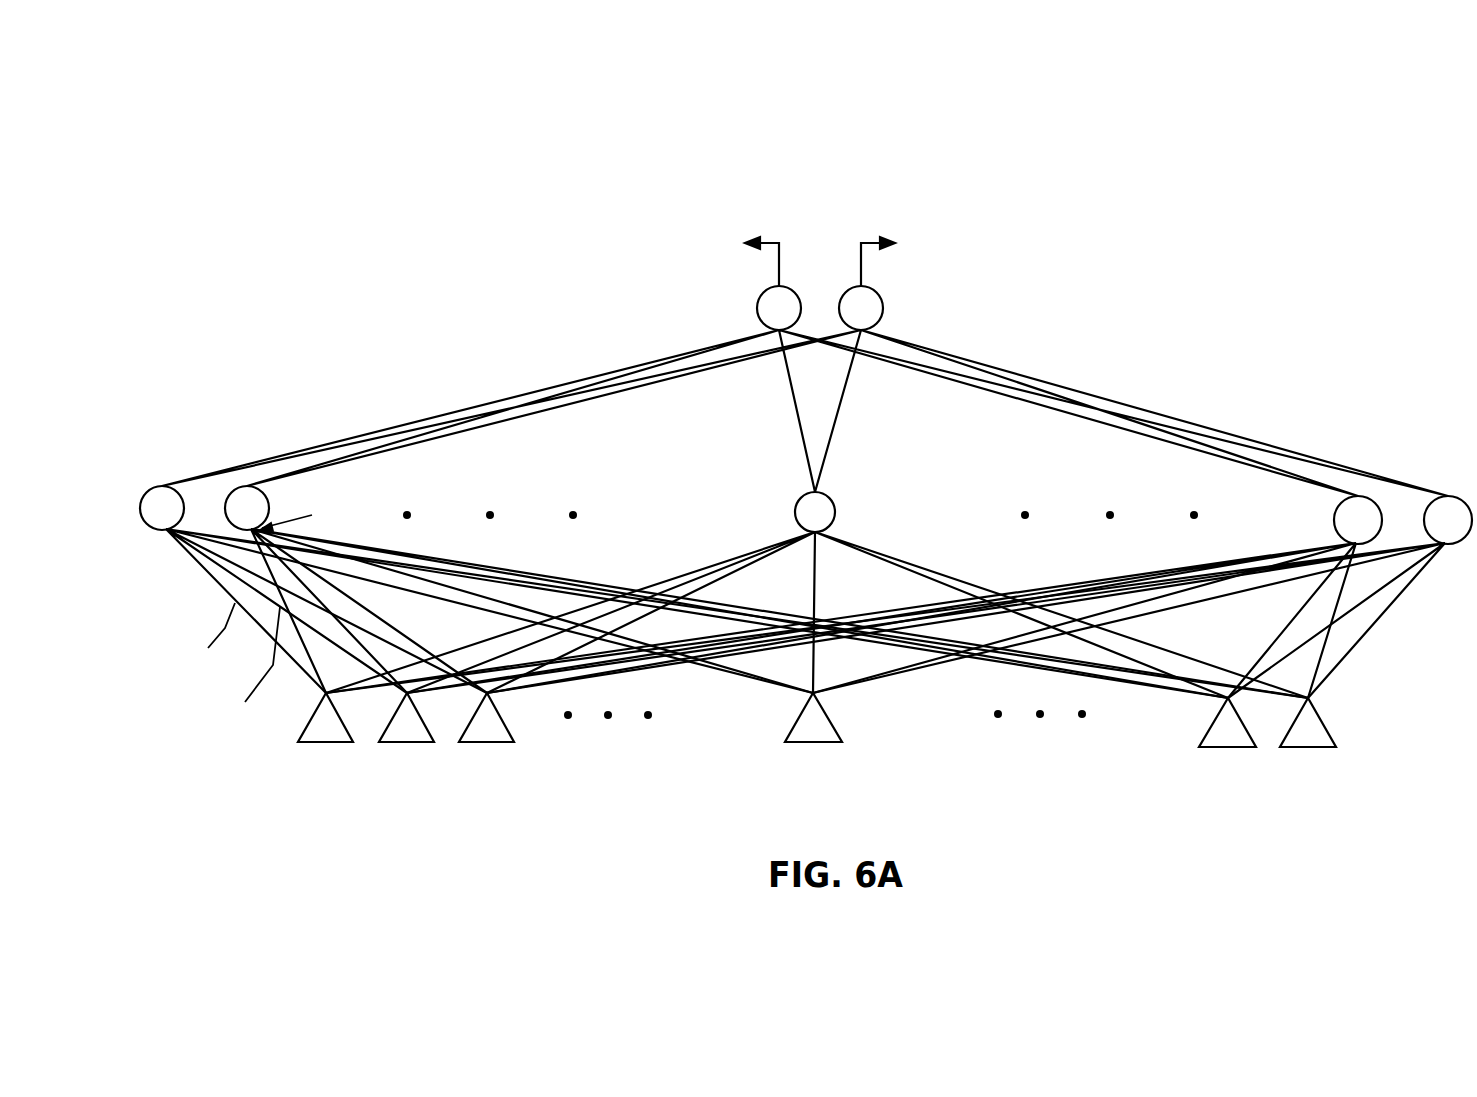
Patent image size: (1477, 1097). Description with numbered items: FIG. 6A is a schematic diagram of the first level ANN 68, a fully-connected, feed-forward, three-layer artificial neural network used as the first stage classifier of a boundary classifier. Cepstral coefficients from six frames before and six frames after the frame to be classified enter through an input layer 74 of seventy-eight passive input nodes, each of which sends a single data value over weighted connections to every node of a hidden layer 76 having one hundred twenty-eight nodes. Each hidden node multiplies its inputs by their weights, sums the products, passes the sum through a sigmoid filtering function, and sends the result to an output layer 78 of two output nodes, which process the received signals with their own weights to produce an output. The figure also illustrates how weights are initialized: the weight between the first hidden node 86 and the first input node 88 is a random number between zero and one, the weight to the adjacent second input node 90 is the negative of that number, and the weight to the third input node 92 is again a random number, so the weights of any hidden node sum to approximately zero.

The first level ANN 68 is at (1218, 207).
The output layer 78 is at (983, 315).
The hidden layer 76 is at (806, 484).
The input layer 74 is at (881, 742).
The first hidden node 86 is at (154, 524).
The first input node 88 is at (330, 735).
The second input node 90 is at (400, 735).
The third input node 92 is at (477, 735).